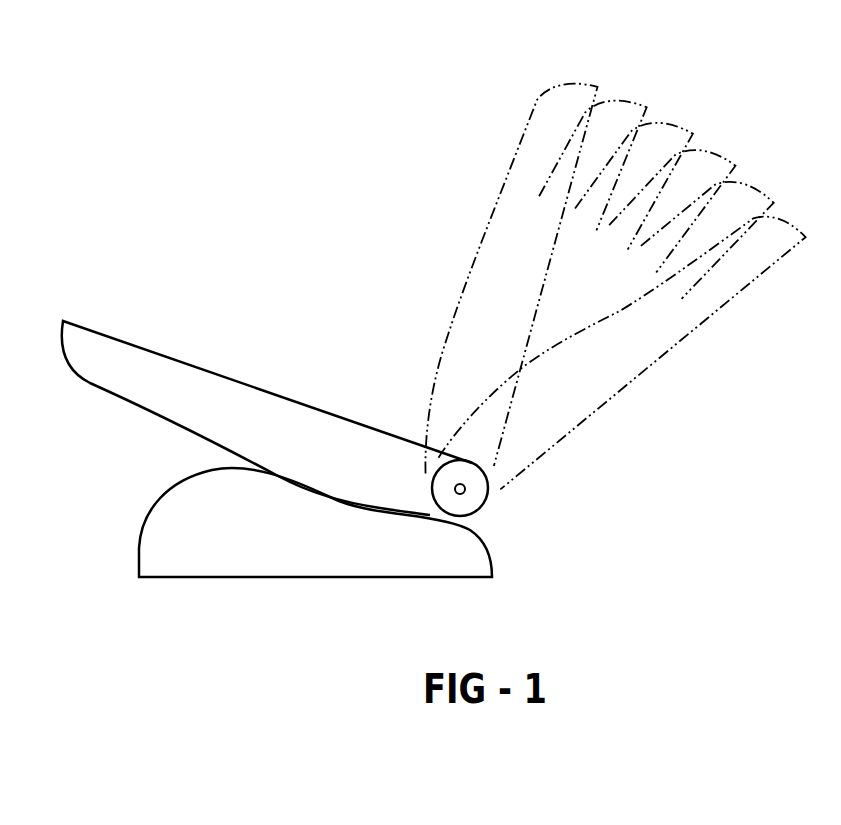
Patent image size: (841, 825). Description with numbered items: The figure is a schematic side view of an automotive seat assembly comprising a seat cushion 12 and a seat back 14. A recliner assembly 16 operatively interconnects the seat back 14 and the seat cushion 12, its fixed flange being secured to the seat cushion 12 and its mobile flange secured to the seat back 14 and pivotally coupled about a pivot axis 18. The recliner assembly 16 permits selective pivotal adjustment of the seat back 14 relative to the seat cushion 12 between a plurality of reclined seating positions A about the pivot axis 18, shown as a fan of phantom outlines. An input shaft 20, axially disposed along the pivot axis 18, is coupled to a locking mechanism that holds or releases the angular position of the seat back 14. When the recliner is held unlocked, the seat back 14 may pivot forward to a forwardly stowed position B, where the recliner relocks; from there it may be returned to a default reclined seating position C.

The seat cushion 12 is at (193, 557).
The seat back 14 is at (608, 269).
The recliner assembly 16 is at (475, 470).
The pivot axis 18 is at (519, 513).
The input shaft 20 is at (466, 493).
The reclined seating positions A is at (657, 111).
The forwardly stowed position B is at (85, 339).
The default reclined seating position C is at (751, 283).